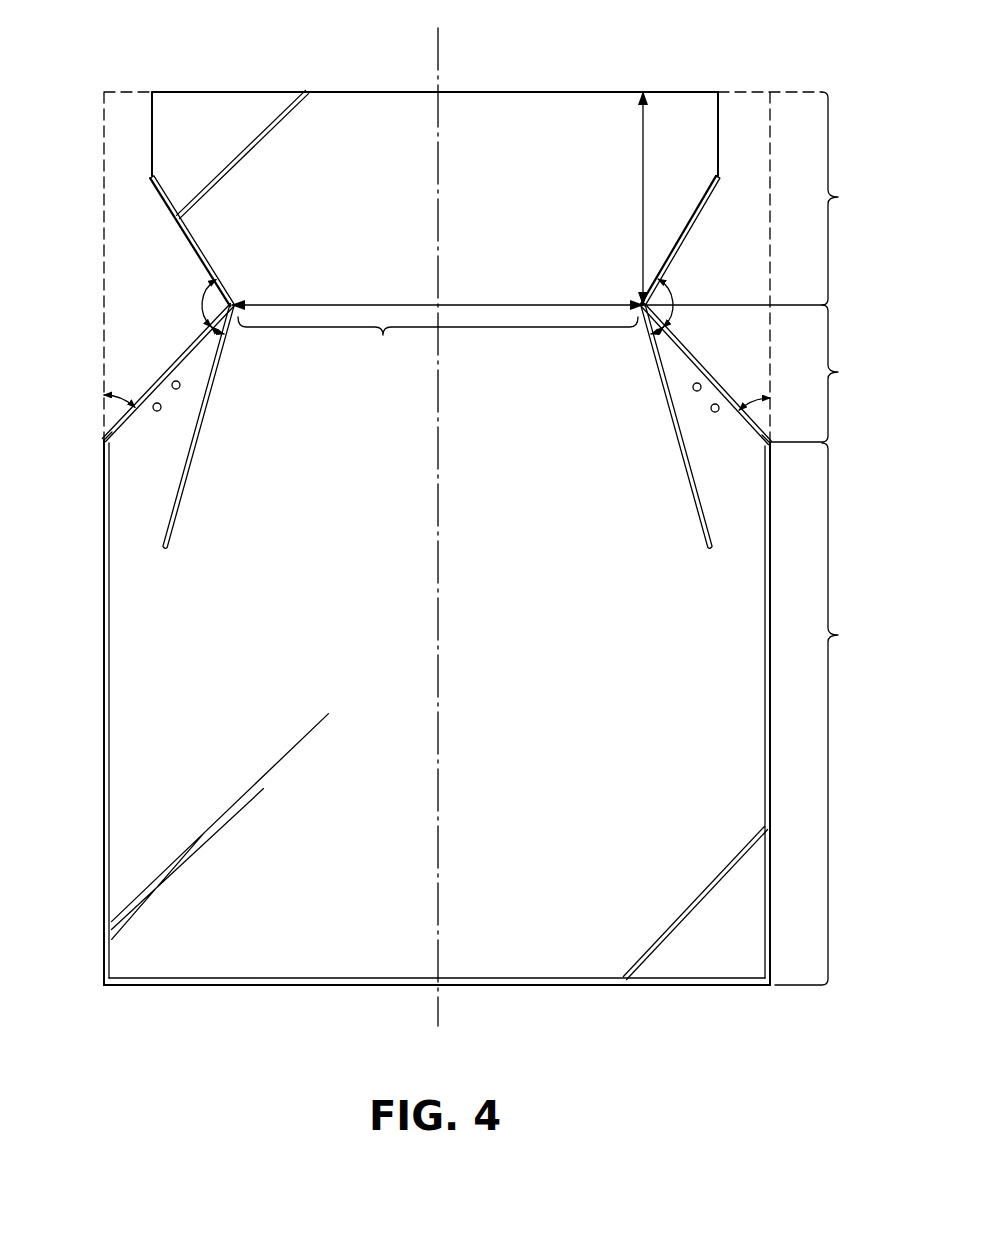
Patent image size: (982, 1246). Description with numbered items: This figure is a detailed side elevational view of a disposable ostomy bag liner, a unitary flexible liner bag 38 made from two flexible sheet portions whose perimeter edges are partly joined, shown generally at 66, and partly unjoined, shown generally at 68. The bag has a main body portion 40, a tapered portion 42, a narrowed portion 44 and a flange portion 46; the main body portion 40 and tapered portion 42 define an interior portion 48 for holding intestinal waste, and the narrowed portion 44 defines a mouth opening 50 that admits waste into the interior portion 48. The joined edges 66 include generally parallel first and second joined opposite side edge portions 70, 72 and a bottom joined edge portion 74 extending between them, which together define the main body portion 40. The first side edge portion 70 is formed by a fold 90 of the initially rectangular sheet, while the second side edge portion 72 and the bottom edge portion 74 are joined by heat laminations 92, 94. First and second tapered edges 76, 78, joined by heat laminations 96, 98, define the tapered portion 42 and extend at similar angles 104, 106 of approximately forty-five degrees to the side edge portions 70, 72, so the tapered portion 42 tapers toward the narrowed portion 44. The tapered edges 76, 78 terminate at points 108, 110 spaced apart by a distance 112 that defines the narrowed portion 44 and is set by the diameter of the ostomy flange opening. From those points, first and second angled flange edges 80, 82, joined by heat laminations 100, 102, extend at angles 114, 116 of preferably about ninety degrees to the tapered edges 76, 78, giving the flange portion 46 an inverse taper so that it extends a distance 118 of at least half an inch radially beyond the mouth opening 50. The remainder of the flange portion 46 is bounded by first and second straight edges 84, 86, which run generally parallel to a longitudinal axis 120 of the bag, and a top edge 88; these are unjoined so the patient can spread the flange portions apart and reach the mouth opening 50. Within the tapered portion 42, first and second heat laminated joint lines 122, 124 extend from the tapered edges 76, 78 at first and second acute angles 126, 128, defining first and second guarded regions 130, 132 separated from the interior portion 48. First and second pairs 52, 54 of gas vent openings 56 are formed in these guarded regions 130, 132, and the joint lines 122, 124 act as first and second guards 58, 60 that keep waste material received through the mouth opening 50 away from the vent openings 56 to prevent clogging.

The liner bag 38 is at (214, 990).
The main body portion 40 is at (827, 714).
The tapered portion 42 is at (761, 373).
The narrowed portion 44 is at (438, 341).
The flange portion 46 is at (850, 198).
The interior portion 48 is at (338, 650).
The mouth opening 50 is at (495, 268).
The first pair of gas vent openings 52 is at (742, 402).
The second pair of gas vent openings 54 is at (165, 382).
The gas vent openings 56 is at (162, 406).
The first guard 58 is at (688, 478).
The second guard 60 is at (180, 527).
The joined perimeter edges 66 is at (103, 990).
The unjoined perimeter edges 68 is at (652, 72).
The first joined side edge portion 70 is at (775, 567).
The second joined side edge portion 72 is at (104, 670).
The bottom joined edge portion 74 is at (526, 992).
The first tapered edge 76 is at (725, 397).
The second tapered edge 78 is at (186, 353).
The first flange edge 80 is at (690, 235).
The second flange edge 82 is at (188, 232).
The first straight edge 84 is at (718, 135).
The second straight edge 86 is at (152, 133).
The top edge 88 is at (380, 92).
The fold 90 is at (768, 692).
The heat lamination 92 is at (110, 738).
The heat lamination 94 is at (356, 978).
The heat lamination 96 is at (757, 438).
The heat lamination 98 is at (117, 437).
The heat lamination 100 is at (712, 188).
The heat lamination 102 is at (222, 288).
The angle 104 is at (765, 418).
The angle 106 is at (113, 413).
The point 108 is at (640, 300).
The point 110 is at (238, 300).
The distance 112 is at (402, 304).
The angle 114 is at (667, 302).
The angle 116 is at (204, 292).
The distance 118 is at (643, 188).
The longitudinal axis 120 is at (440, 48).
The first heat laminated joint line 122 is at (667, 393).
The second heat laminated joint line 124 is at (205, 415).
The first acute angle 126 is at (662, 345).
The second acute angle 128 is at (215, 340).
The first guarded region 130 is at (690, 406).
The second guarded region 132 is at (170, 458).